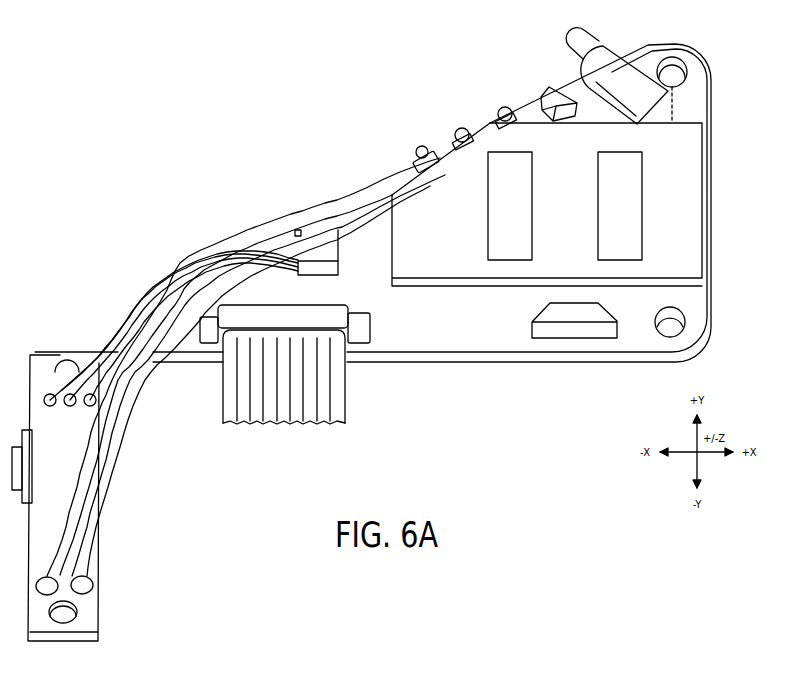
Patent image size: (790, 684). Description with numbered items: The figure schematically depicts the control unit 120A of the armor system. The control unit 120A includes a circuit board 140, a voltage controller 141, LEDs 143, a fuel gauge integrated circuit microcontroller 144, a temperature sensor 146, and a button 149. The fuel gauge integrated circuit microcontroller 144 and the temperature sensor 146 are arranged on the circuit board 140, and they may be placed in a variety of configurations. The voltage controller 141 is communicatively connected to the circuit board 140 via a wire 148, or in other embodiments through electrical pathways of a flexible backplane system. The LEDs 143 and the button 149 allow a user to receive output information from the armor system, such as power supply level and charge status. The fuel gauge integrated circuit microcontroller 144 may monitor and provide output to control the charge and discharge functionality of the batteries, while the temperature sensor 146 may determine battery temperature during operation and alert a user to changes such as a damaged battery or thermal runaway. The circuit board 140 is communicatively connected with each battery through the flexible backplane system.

The control unit 120A is at (358, 218).
The circuit board 140 is at (395, 352).
The voltage controller 141 is at (44, 355).
The LEDs 143 is at (423, 148).
The fuel gauge integrated circuit (IC) microcontroller 144 is at (644, 202).
The temperature sensor 146 is at (273, 425).
The wire 148 is at (104, 500).
The button 149 is at (612, 48).